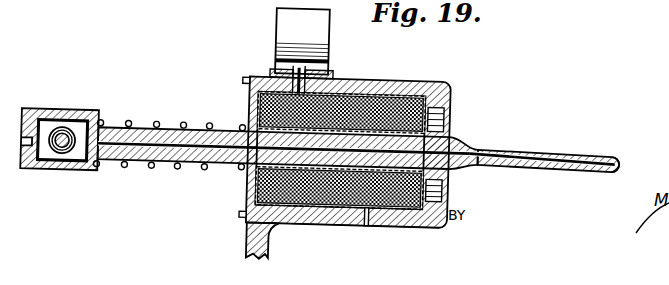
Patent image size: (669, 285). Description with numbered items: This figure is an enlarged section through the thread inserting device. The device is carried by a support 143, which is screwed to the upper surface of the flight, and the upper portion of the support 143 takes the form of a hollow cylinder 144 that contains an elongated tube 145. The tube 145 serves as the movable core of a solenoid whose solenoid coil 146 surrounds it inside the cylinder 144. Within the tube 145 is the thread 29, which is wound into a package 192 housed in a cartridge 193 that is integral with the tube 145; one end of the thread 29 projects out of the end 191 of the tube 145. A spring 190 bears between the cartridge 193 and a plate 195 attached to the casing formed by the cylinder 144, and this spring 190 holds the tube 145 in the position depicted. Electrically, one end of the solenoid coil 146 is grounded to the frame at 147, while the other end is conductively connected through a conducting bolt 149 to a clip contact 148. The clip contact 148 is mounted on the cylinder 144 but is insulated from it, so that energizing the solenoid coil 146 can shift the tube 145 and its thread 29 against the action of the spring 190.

The thread 29 is at (631, 147).
The support 143 is at (251, 240).
The hollow cylinder 144 is at (330, 211).
The elongated tube 145 is at (143, 154).
The solenoid coil 146 is at (249, 186).
The ground connection 147 is at (370, 207).
The clip contact 148 is at (319, 24).
The conducting bolt 149 is at (321, 56).
The spring 190 is at (127, 121).
The end of the tube 191 is at (615, 140).
The package 192 is at (65, 154).
The cartridge 193 is at (56, 108).
The plate 195 is at (247, 97).